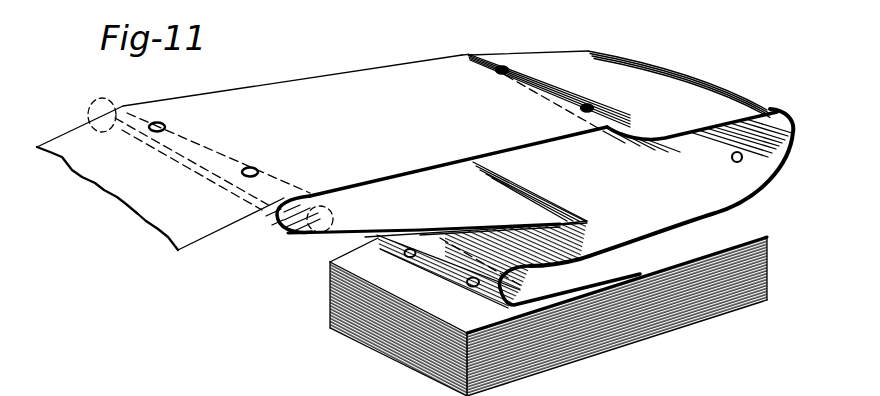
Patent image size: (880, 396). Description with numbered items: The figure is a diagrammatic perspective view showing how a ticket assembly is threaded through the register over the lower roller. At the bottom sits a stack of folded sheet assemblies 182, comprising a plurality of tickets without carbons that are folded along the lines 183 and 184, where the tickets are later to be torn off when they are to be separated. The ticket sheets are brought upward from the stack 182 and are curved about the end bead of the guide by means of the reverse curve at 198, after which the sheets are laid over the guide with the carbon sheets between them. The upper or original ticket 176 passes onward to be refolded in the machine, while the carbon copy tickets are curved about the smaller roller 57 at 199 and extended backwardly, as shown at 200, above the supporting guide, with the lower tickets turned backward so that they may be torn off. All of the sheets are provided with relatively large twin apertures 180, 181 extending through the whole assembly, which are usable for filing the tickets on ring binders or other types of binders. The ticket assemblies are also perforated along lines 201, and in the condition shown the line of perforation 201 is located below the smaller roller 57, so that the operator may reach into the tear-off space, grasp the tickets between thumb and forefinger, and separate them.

The upper or original ticket 176 is at (63, 147).
The roller 57 is at (330, 221).
The twin aperture 180 is at (160, 122).
The twin aperture 181 is at (252, 168).
The stack of folded sheet assemblies 182 is at (605, 333).
The fold line 183 is at (503, 270).
The fold line 184 is at (771, 149).
The reverse curve 198 is at (792, 130).
The curve about roller 199 is at (277, 220).
The backwardly extended portion of tickets 200 is at (472, 224).
The line of perforation 201 is at (303, 236).